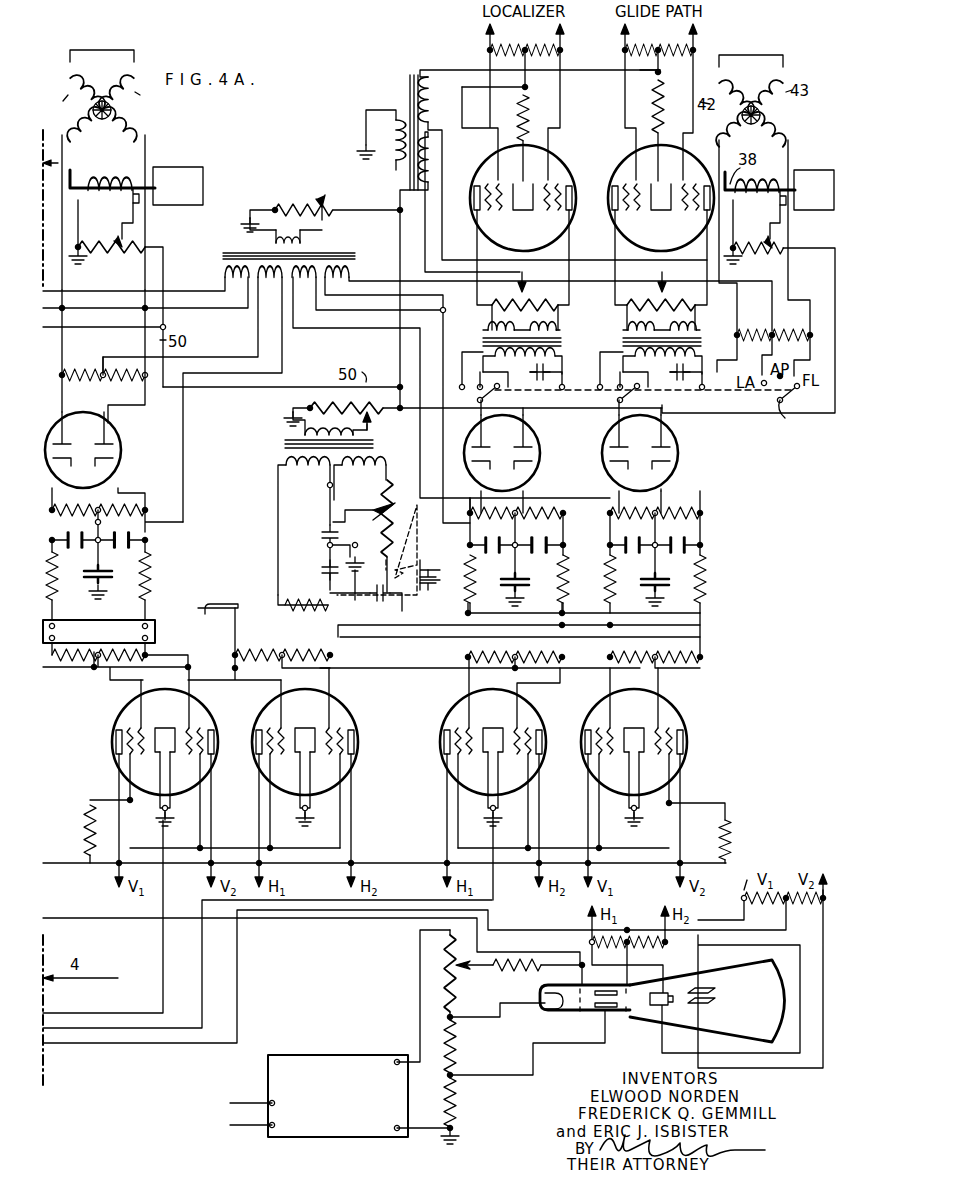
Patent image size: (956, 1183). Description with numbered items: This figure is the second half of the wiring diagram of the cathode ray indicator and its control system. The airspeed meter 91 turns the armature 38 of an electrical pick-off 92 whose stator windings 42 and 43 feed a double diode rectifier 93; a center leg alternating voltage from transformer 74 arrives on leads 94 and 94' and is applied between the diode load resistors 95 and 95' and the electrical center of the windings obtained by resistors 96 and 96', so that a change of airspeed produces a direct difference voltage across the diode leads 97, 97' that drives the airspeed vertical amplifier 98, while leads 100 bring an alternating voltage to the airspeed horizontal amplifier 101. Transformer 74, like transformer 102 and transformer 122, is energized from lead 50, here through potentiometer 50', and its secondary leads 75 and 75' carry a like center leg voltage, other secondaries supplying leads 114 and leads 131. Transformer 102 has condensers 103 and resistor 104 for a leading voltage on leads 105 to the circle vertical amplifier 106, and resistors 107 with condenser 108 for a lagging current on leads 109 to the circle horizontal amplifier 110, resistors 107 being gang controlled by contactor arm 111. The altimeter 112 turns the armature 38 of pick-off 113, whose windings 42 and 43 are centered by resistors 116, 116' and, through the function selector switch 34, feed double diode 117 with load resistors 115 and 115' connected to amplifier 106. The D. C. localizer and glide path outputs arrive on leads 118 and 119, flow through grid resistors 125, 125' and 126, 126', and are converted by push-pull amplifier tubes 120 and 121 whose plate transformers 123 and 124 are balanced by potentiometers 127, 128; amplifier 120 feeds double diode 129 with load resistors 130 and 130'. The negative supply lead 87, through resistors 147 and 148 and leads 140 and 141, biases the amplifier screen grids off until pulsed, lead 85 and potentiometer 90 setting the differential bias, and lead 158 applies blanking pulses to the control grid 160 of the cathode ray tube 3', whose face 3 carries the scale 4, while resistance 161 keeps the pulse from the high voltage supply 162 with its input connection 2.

The AC input 2 is at (233, 1103).
The face of the cathode ray tube 3 is at (707, 979).
The cathode ray tube 3' is at (707, 973).
The scale 4 is at (50, 155).
The function selector switch 34 is at (790, 412).
The armature 38 is at (81, 186).
The stator winding 42 is at (56, 103).
The stator winding 43 is at (146, 93).
The lead 50 is at (382, 241).
The potentiometer 50' is at (287, 205).
The transformer 74 is at (259, 246).
The lead 75 is at (145, 296).
The lead 75' is at (229, 323).
The lead 85 is at (390, 680).
The negative supply lead 87 is at (86, 874).
The potentiometer 90 is at (155, 632).
The airspeed meter 91 is at (200, 167).
The electrical pick-off 92 is at (115, 170).
The double diode rectifier 93 is at (121, 460).
The lead 94 is at (295, 357).
The lead 94' is at (292, 379).
The diode load resistor 95 is at (98, 502).
The diode load resistor 95' is at (159, 498).
The resistor 96 is at (103, 359).
The resistor 96' is at (116, 352).
The diode lead 97 is at (61, 580).
The diode lead 97' is at (158, 580).
The airspeed vertical amplifier 98 is at (110, 718).
The leads 100 is at (227, 590).
The airspeed horizontal amplifier 101 is at (358, 752).
The transformer 102 is at (265, 460).
The condensers 103 is at (318, 530).
The resistor 104 is at (312, 605).
The leads 105 is at (390, 652).
The circle vertical amplifier 106 is at (682, 712).
The resistors 107 is at (380, 528).
The condenser 108 is at (390, 605).
The leads 109 is at (428, 572).
The circle horizontal amplifier 110 is at (445, 778).
The contactor arm 111 is at (388, 508).
The altimeter 112 is at (800, 170).
The electrical pick-off 113 is at (766, 195).
The leads 114 is at (366, 294).
The diode load resistor 115 is at (654, 505).
The diode load resistor 115' is at (712, 503).
The resistor 116 is at (765, 344).
The resistor 116' is at (791, 321).
The double diode 117 is at (688, 445).
The leads 118 is at (547, 33).
The leads 119 is at (684, 33).
The amplifier tube 120 is at (582, 146).
The amplifier tube 121 is at (612, 174).
The transformer 122 is at (395, 105).
The plate transformer 123 is at (565, 330).
The plate transformer 124 is at (620, 345).
The grid resistor 125 is at (500, 44).
The grid resistor 125' is at (482, 58).
The grid resistor 126 is at (636, 44).
The grid resistor 126' is at (616, 58).
The potentiometer 127 is at (510, 298).
The potentiometer 128 is at (648, 298).
The double diode 129 is at (550, 445).
The load resistor 130 is at (516, 495).
The load resistor 130' is at (572, 505).
The leads 131 is at (372, 313).
The lead 140 is at (139, 1013).
The lead 141 is at (240, 990).
The resistor 147 is at (85, 850).
The resistor 148 is at (735, 845).
The lead 158 is at (92, 930).
The control grid 160 is at (580, 1018).
The resistance 161 is at (497, 975).
The high voltage supply 162 is at (354, 1054).